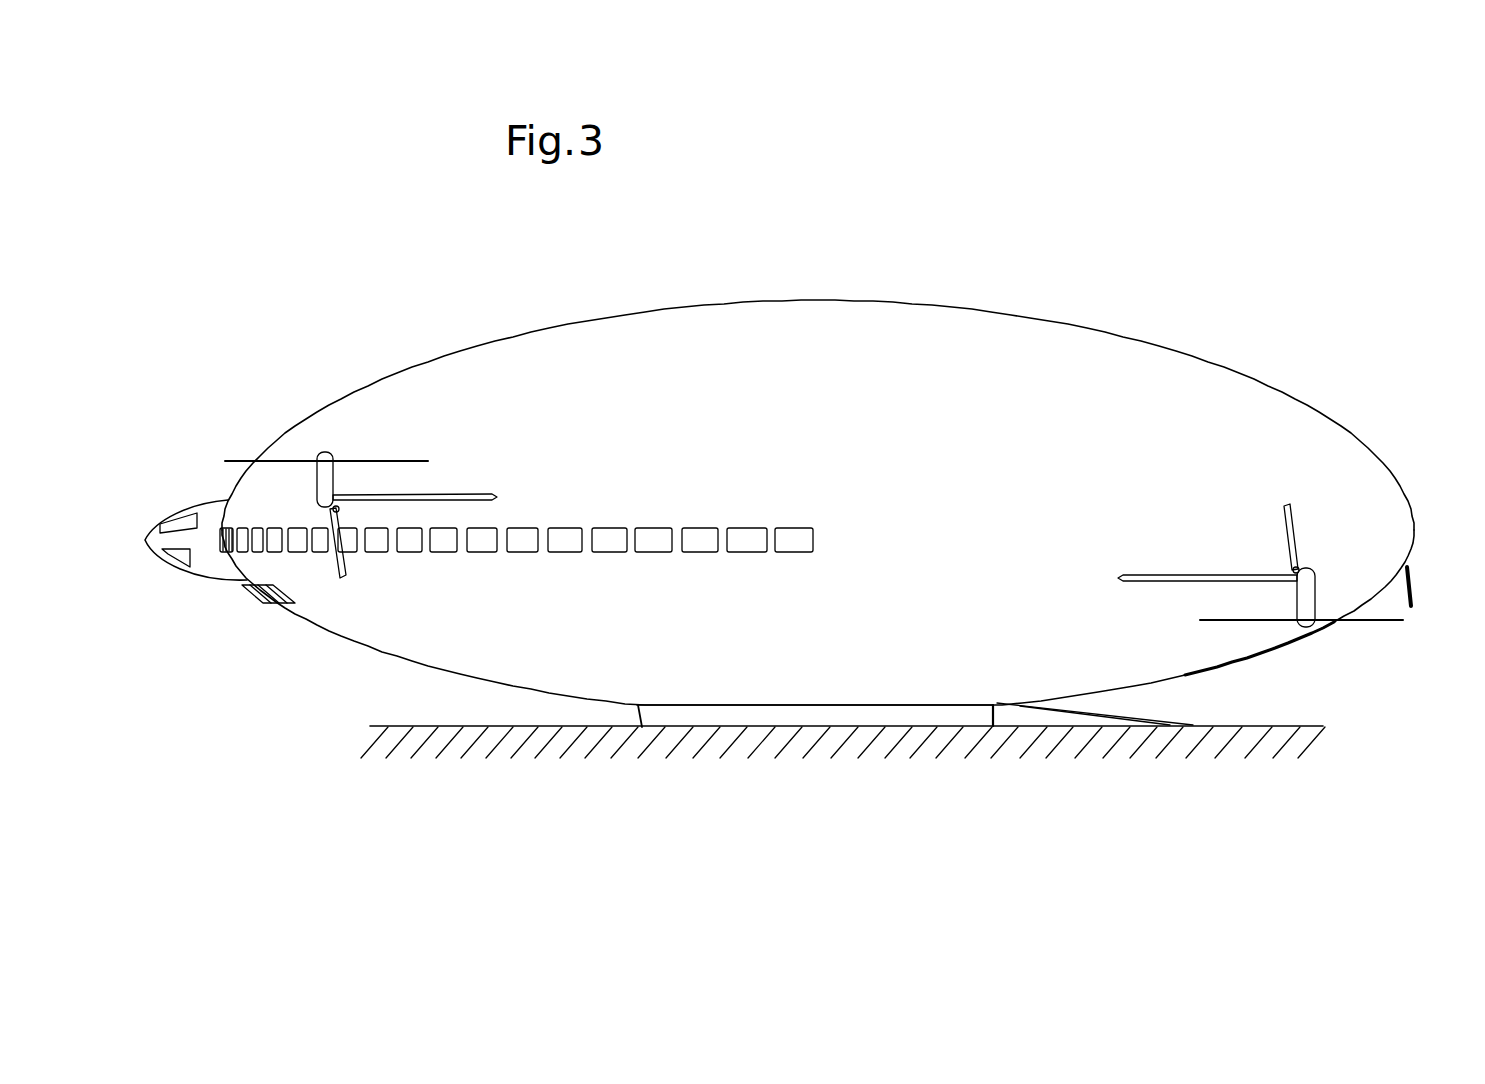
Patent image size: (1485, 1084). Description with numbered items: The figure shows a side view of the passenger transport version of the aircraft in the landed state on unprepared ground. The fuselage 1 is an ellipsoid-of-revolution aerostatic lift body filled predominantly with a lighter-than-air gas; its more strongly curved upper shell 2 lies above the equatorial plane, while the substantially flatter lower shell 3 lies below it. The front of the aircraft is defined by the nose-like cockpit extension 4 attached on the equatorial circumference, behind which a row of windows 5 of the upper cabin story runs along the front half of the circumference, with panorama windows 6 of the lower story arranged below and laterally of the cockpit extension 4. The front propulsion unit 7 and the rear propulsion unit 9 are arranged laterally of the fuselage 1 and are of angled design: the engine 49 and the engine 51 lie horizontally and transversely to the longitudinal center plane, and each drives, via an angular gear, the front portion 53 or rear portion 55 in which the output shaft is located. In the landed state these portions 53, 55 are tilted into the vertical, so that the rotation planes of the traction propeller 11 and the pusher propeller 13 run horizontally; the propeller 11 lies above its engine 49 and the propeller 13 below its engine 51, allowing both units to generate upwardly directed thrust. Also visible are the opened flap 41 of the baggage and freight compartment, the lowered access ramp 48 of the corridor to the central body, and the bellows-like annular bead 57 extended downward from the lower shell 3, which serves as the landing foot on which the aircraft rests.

The fuselage 1 is at (818, 455).
The upper shell 2 is at (801, 364).
The lower shell 3 is at (807, 676).
The cockpit extension 4 is at (200, 555).
The windows 5 is at (603, 543).
The panorama windows 6 is at (250, 604).
The front propulsion unit 7 is at (369, 478).
The rear propulsion unit 9 is at (1240, 565).
The propeller 11 is at (397, 448).
The propeller 13 is at (1348, 630).
The flap 41 is at (1412, 587).
The access ramp 48 is at (1116, 713).
The engine 49 is at (337, 495).
The engine 51 is at (1293, 570).
The front portion 53 is at (320, 478).
The rear portion 55 is at (1307, 598).
The annular bead 57 is at (840, 712).